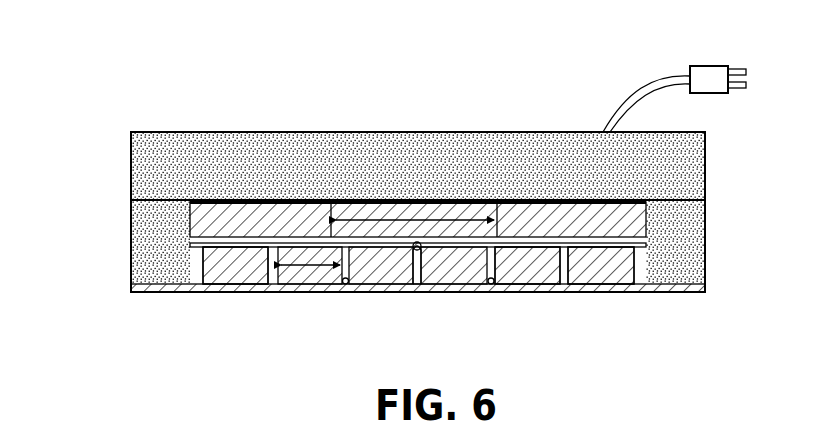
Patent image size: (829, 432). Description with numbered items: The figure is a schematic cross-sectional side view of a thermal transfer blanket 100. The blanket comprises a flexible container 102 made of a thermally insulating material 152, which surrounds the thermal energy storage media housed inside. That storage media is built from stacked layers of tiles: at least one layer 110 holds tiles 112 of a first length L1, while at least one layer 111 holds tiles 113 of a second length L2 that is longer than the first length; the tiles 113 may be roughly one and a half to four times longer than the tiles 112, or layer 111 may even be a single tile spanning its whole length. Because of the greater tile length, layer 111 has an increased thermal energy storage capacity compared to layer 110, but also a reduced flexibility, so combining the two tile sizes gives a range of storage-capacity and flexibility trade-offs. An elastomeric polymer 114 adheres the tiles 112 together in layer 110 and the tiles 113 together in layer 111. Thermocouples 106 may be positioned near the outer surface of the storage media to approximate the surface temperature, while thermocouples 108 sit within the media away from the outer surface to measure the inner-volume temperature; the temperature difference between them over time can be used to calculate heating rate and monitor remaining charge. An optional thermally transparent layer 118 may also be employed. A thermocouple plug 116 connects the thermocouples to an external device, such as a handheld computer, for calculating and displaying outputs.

The thermal transfer blanket 100 is at (100, 42).
The flexible container 102 is at (133, 210).
The thermally insulating material 152 is at (151, 165).
The layer 111 is at (190, 214).
The tiles 113 is at (555, 210).
The layer 110 is at (190, 254).
The elastomeric polymer 114 is at (270, 288).
The tiles 112 is at (602, 263).
The thermocouples 106 is at (346, 286).
The thermocouples 108 is at (396, 286).
The thermally transparent layer 118 is at (431, 286).
The thermocouple plug 116 is at (706, 66).
The first length L1 is at (305, 285).
The second length L2 is at (390, 210).